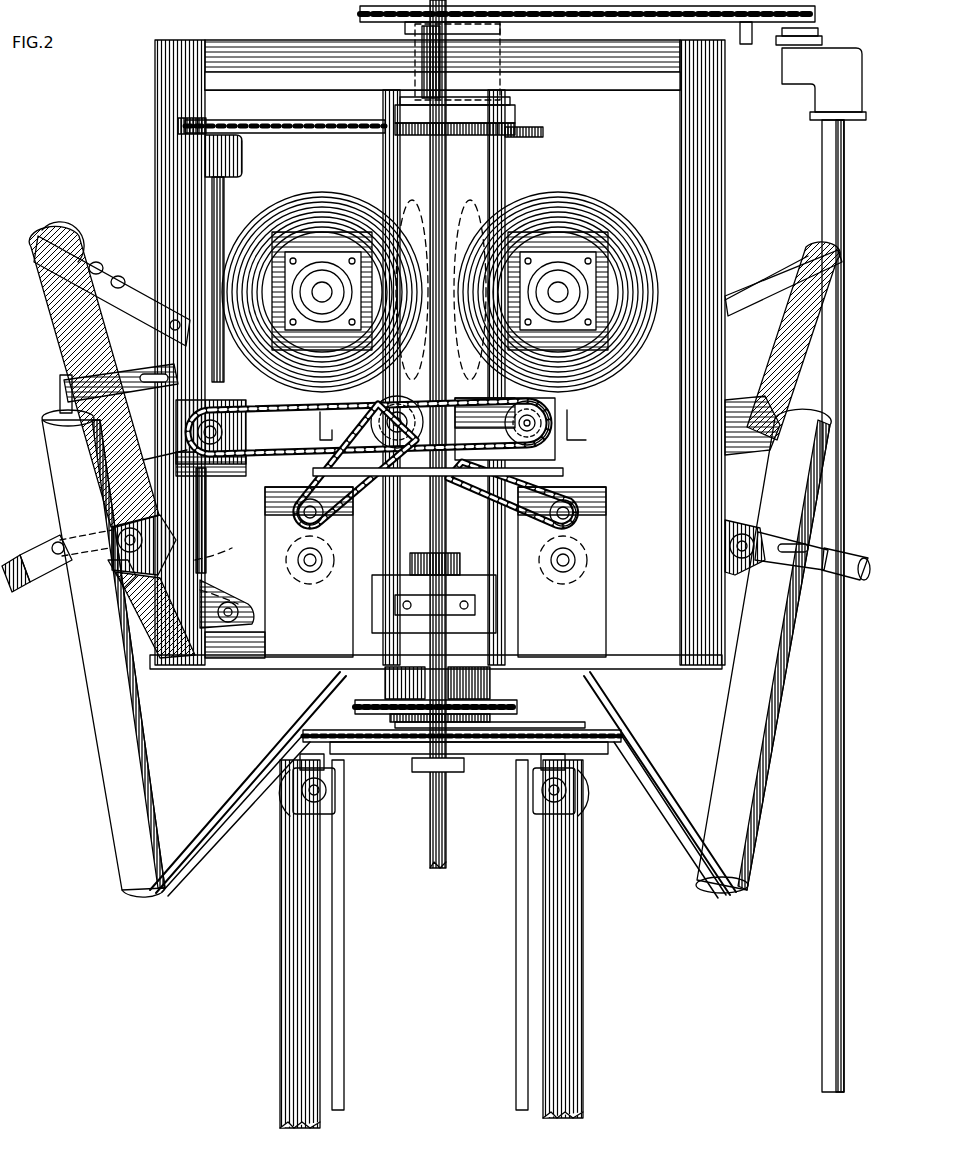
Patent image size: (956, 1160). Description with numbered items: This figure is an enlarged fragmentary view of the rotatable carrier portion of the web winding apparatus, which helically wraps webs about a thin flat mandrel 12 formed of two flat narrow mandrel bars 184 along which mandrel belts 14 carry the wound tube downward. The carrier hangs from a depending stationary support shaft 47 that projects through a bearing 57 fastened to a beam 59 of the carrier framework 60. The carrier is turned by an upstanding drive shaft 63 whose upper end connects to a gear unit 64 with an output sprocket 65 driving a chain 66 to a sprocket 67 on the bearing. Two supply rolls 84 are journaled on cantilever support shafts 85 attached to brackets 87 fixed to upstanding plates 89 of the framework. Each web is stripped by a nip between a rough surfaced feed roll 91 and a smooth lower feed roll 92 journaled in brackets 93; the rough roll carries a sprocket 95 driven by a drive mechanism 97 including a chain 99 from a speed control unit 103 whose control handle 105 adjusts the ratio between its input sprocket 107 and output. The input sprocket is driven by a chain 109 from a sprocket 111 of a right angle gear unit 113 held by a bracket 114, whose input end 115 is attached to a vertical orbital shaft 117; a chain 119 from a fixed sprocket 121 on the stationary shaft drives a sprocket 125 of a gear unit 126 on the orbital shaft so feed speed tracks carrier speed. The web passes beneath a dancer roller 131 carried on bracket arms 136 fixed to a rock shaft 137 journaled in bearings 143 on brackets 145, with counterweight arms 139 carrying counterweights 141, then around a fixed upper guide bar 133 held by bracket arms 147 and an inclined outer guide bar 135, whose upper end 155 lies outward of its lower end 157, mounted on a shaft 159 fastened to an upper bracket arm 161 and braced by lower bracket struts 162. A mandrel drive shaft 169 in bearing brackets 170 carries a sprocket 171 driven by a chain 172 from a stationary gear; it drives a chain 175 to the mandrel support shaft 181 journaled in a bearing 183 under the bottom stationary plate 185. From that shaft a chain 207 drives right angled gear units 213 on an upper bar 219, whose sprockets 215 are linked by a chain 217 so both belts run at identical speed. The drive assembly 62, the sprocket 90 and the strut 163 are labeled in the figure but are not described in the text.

The mandrel 12 is at (590, 1016).
The mandrel belts 14 is at (280, 942).
The stationary support shaft 47 is at (457, 62).
The bearing 57 is at (480, 34).
The beam 59 is at (356, 80).
The carrier framework 60 is at (248, 46).
The drive assembly 62 is at (818, 136).
The drive shaft 63 is at (830, 188).
The gear unit 64 is at (846, 82).
The output sprocket 65 is at (828, 30).
The chain 66 is at (744, 40).
The sprocket 67 is at (362, 10).
The supply rolls 84 is at (288, 206).
The cantilever support shaft 85 is at (325, 292).
The bracket 87 is at (322, 240).
The upstanding plate 89 is at (489, 172).
The sprocket 90 is at (540, 418).
The rough surfaced feed roll 91 is at (322, 524).
The smooth surfaced lower feed roll 92 is at (332, 556).
The brackets 93 is at (312, 620).
The sprocket 95 is at (296, 512).
The drive mechanism 97 is at (362, 488).
The chain 99 is at (296, 468).
The speed control unit 103 is at (398, 398).
The control handle 105 is at (320, 412).
The input sprocket 107 is at (420, 400).
The chain 109 is at (218, 478).
The sprocket 111 is at (148, 463).
The right angle gear unit 113 is at (196, 512).
The bracket 114 is at (160, 586).
The input end 115 is at (190, 305).
The orbital shaft 117 is at (218, 206).
The chain 119 is at (305, 125).
The fixed sprocket 121 is at (540, 130).
The sprocket 125 is at (222, 125).
The gear unit 126 is at (242, 153).
The dancer roller 131 is at (238, 602).
The upper guide bar 133 is at (52, 300).
The outer guide bar 135 is at (96, 690).
The bracket arms 136 is at (220, 572).
The rock shaft 137 is at (112, 562).
The counterweight arms 139 is at (50, 548).
The counterweights 141 is at (34, 584).
The bearings 143 is at (120, 532).
The brackets 145 is at (50, 232).
The bracket arms 147 is at (106, 258).
The upper end 155 is at (40, 424).
The lower end 157 is at (126, 870).
The shaft 159 is at (58, 386).
The upper bracket arm 161 is at (98, 384).
The lower bracket struts 162 is at (312, 718).
The strut 163 is at (184, 890).
The mandrel drive shaft 169 is at (442, 172).
The bearing brackets 170 is at (482, 598).
The sprocket 171 is at (480, 98).
The chain 172 is at (400, 110).
The chain 175 is at (502, 706).
The mandrel support shaft 181 is at (428, 828).
The bearing 183 is at (464, 672).
The mandrel bars 184 is at (338, 918).
The bottom stationary plate 185 is at (392, 670).
The chain 207 is at (540, 714).
The right angled gear unit 213 is at (540, 766).
The sprocket 215 is at (486, 756).
The chain 217 is at (376, 728).
The upper bar 219 is at (368, 754).